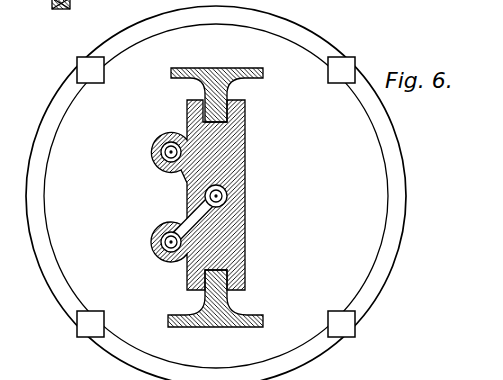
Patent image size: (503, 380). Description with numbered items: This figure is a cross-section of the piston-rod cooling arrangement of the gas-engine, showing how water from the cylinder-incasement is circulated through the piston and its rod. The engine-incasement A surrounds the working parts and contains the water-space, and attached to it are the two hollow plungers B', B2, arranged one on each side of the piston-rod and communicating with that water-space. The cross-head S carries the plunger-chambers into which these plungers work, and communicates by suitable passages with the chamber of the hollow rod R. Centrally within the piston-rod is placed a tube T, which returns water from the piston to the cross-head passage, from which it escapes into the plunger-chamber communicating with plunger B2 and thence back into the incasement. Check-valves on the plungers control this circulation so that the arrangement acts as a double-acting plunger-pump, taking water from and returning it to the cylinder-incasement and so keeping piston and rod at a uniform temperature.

The engine-incasement A is at (216, 193).
The cross-head S is at (245, 178).
The rail W is at (215, 197).
The hollow rod R is at (244, 214).
The hollow plunger B' is at (149, 152).
The hollow plunger B2 is at (153, 243).
The tube T is at (229, 196).